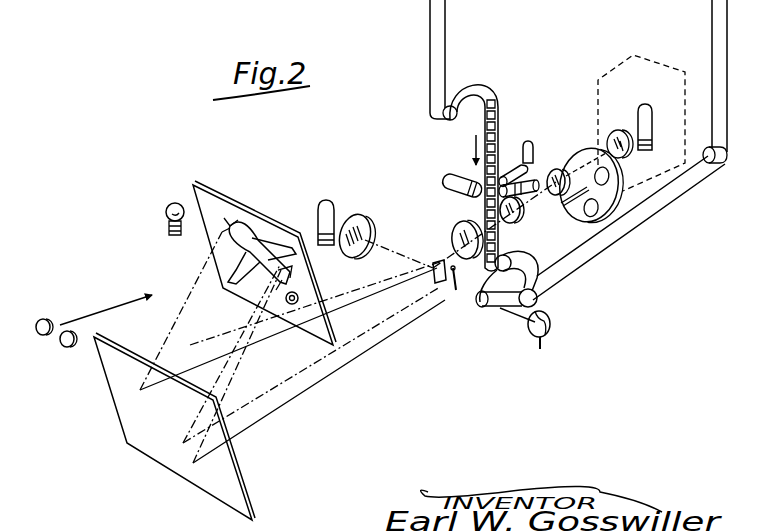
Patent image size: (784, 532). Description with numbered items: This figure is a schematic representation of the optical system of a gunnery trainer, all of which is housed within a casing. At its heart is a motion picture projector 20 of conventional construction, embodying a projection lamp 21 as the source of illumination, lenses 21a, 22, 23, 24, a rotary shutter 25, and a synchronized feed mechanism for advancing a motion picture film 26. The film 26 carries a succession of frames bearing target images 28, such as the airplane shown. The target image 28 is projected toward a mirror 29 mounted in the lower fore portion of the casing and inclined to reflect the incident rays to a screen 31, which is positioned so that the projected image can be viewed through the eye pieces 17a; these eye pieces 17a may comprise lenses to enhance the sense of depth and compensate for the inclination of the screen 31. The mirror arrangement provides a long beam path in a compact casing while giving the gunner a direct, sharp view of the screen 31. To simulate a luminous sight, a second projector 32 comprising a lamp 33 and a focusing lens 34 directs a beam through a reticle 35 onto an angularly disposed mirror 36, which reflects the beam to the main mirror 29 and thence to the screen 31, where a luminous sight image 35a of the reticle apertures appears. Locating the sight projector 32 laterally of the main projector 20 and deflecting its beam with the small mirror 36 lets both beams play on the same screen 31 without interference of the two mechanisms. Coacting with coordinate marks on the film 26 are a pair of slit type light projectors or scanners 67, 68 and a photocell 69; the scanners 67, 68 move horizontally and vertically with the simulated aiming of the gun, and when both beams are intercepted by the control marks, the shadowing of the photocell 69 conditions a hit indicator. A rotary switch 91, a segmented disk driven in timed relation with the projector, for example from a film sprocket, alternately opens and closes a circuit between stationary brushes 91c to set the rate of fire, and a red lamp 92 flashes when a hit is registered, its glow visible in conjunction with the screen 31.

The eye pieces 17a is at (63, 346).
The motion picture projector 20 is at (603, 68).
The projection lamp 21 is at (641, 125).
The lens 21a is at (614, 130).
The lens 22 is at (552, 168).
The lens 23 is at (520, 216).
The lens 24 is at (452, 236).
The rotary shutter 25 is at (618, 205).
The motion picture film 26 is at (499, 112).
The target image 28 is at (246, 291).
The mirror 29 is at (165, 460).
The screen 31 is at (233, 200).
The second projector 32 is at (371, 215).
The lamp 33 is at (324, 216).
The focusing lens 34 is at (371, 222).
The reticle 35 is at (432, 269).
The sight image 35a is at (293, 306).
The mirror 36 is at (456, 291).
The scanner 67 is at (510, 152).
The scanner 68 is at (521, 196).
The photocell 69 is at (456, 192).
The rotary switch 91 is at (556, 318).
The stationary brushes 91c is at (548, 339).
The red lamp 92 is at (166, 211).